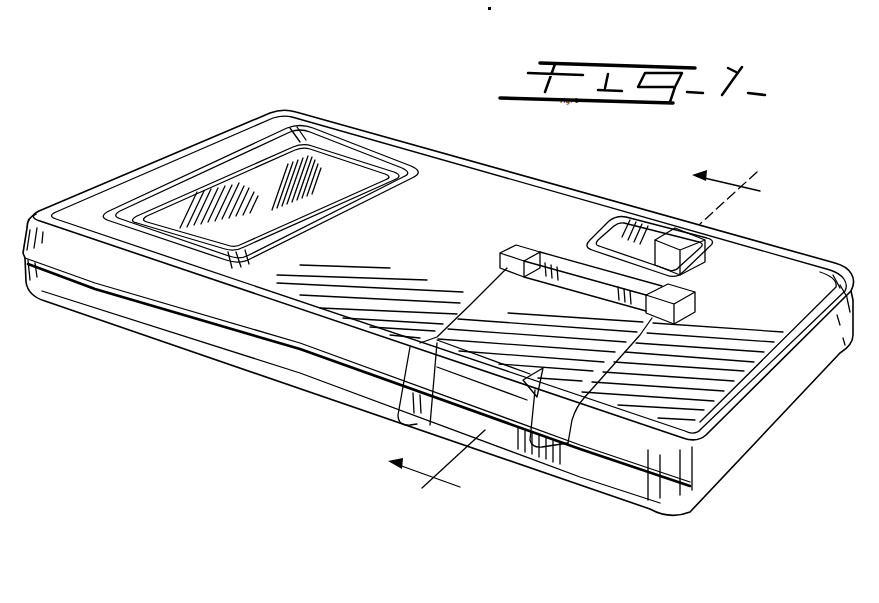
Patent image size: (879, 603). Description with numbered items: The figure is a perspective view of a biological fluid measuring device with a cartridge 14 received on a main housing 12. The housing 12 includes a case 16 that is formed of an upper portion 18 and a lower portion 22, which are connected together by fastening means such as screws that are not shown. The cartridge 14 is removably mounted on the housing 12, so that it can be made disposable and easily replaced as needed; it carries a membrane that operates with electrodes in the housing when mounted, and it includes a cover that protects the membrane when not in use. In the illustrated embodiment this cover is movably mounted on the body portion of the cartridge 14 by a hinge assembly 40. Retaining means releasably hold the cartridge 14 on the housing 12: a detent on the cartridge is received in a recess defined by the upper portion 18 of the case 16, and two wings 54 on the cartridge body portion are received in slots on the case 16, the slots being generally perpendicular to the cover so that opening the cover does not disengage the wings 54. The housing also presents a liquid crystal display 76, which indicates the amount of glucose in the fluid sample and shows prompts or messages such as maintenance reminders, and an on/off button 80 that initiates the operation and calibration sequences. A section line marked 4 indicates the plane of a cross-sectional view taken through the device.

The section line 4- 4 is at (579, 341).
The main housing 12 is at (190, 355).
The cartridge 14 is at (494, 311).
The case 16 is at (763, 418).
The upper portion 18 is at (470, 190).
The lower portion 22 is at (280, 374).
The hinge assembly 40 is at (697, 308).
The wings 54 is at (540, 460).
The liquid crystal display 76 is at (167, 223).
The on/off button 80 is at (673, 245).